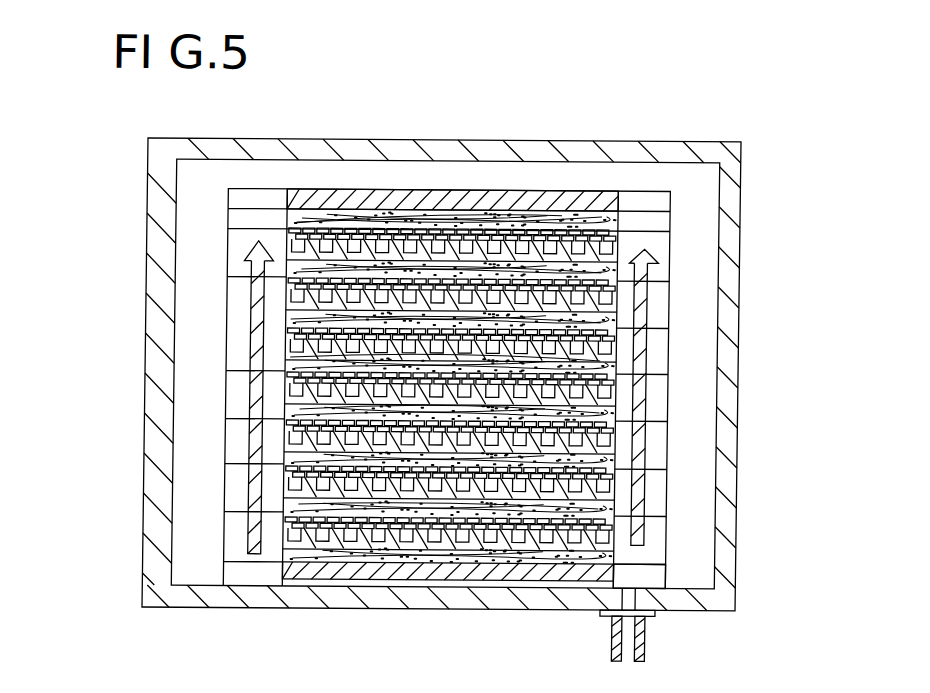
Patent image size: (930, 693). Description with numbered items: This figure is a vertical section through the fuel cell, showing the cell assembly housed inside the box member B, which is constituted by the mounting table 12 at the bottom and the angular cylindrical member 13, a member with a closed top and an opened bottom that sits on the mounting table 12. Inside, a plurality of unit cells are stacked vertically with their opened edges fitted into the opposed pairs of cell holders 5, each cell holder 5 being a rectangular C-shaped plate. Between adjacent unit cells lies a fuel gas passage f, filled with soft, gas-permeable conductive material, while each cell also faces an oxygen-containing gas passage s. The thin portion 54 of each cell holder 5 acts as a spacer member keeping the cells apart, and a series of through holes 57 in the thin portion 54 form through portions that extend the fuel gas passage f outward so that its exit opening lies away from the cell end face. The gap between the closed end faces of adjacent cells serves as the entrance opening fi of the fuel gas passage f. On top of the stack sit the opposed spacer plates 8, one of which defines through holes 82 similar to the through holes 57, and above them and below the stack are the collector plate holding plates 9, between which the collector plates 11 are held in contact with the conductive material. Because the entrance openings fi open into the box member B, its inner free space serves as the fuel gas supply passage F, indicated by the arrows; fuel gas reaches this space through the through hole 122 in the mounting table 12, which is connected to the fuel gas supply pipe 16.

The box member B is at (120, 166).
The angular cylindrical member 13 is at (744, 182).
The mounting table 12 is at (710, 609).
The spacer plate 8 is at (641, 190).
The collector plate 11 is at (570, 192).
The collector plate holding plate 9 is at (667, 577).
The cell holder 5 is at (664, 412).
The fuel gas passage f is at (349, 478).
The oxygen-containing gas passage s is at (503, 545).
The thin portion 54 is at (300, 510).
The through holes 82 is at (306, 213).
The through holes 57 is at (385, 215).
The entrance opening of the fuel gas passage fi is at (618, 270).
The fuel gas supply passage F is at (246, 288).
The through hole 122 is at (614, 635).
The fuel gas supply pipe 16 is at (648, 636).